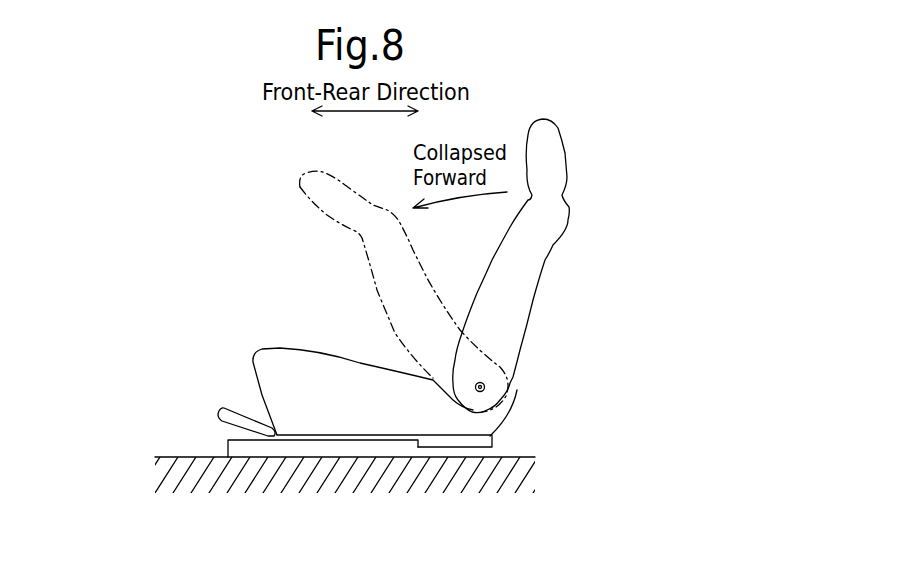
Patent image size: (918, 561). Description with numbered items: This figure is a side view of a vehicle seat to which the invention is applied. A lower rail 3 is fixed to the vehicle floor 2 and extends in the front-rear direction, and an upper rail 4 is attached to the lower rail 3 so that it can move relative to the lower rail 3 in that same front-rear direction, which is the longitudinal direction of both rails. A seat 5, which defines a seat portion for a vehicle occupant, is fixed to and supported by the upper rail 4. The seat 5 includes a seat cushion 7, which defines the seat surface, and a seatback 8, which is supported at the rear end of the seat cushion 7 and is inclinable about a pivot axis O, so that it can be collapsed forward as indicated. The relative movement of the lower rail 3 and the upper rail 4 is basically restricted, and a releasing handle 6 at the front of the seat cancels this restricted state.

The vehicle floor 2 is at (172, 457).
The lower rail 3 is at (334, 450).
The upper rail 4 is at (492, 437).
The seat 5 is at (345, 275).
The releasing handle 6 is at (238, 406).
The seat cushion 7 is at (368, 372).
The seatback 8 is at (487, 290).
The pivot axis O is at (486, 386).